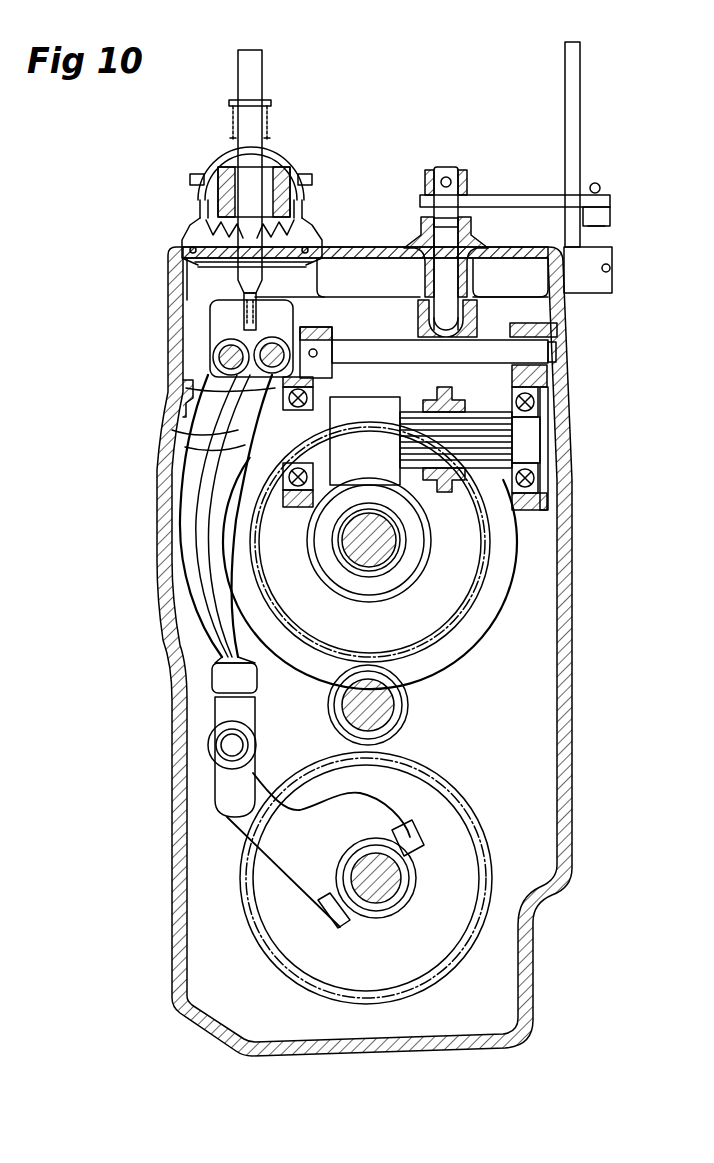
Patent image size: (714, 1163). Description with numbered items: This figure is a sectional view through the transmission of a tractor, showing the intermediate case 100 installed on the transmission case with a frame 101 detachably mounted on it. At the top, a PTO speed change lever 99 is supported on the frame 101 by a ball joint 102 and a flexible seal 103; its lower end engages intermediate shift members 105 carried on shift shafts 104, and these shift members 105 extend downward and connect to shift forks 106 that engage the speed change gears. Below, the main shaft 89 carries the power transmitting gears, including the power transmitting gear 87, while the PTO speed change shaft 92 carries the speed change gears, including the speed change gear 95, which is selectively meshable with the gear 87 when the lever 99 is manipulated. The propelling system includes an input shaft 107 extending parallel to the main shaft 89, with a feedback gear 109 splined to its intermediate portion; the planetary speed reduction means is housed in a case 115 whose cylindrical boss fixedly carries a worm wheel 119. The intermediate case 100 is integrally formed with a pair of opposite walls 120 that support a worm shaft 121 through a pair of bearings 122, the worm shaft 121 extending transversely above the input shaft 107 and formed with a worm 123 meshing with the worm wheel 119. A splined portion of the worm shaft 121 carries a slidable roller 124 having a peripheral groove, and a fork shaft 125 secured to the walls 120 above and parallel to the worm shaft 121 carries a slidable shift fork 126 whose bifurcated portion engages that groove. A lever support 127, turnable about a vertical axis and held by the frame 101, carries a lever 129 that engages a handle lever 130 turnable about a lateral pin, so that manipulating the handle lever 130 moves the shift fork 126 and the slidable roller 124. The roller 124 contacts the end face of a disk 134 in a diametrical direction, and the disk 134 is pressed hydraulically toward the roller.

The power transmitting gear 87 is at (406, 727).
The main shaft 89 is at (393, 708).
The speed change shaft 92 is at (396, 897).
The speed change gear 95 is at (475, 808).
The PTO speed change lever 99 is at (262, 76).
The intermediate case 100 is at (172, 340).
The frame 101 is at (348, 248).
The ball joint 102 is at (205, 172).
The flexible seal 103 is at (195, 234).
The shift shaft 104 is at (186, 388).
The intermediate shift member 105 is at (172, 430).
The shift fork 106 is at (280, 858).
The input shaft 107 is at (370, 560).
The gear 109 is at (440, 613).
The case 115 is at (340, 563).
The worm wheel 119 is at (413, 563).
The wall 120 is at (285, 508).
The worm shaft 121 is at (527, 440).
The bearing 122 is at (282, 480).
The worm 123 is at (370, 403).
The slidable roller 124 is at (430, 493).
The fork shaft 125 is at (316, 330).
The shift fork 126 is at (472, 320).
The lever support 127 is at (446, 170).
The lever 129 is at (513, 200).
The handle lever 130 is at (575, 140).
The disk 134 is at (495, 500).